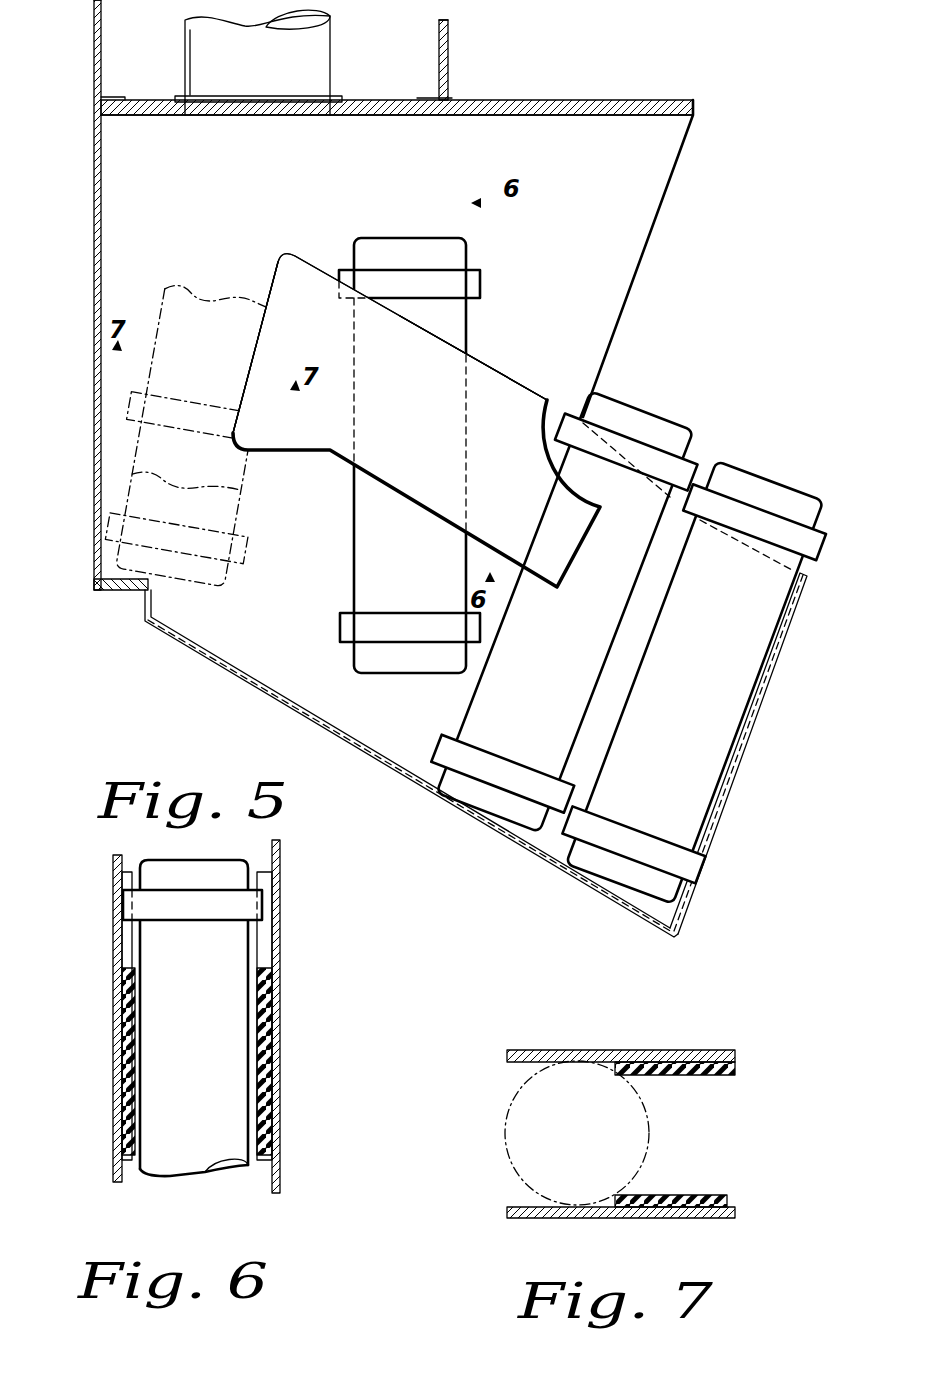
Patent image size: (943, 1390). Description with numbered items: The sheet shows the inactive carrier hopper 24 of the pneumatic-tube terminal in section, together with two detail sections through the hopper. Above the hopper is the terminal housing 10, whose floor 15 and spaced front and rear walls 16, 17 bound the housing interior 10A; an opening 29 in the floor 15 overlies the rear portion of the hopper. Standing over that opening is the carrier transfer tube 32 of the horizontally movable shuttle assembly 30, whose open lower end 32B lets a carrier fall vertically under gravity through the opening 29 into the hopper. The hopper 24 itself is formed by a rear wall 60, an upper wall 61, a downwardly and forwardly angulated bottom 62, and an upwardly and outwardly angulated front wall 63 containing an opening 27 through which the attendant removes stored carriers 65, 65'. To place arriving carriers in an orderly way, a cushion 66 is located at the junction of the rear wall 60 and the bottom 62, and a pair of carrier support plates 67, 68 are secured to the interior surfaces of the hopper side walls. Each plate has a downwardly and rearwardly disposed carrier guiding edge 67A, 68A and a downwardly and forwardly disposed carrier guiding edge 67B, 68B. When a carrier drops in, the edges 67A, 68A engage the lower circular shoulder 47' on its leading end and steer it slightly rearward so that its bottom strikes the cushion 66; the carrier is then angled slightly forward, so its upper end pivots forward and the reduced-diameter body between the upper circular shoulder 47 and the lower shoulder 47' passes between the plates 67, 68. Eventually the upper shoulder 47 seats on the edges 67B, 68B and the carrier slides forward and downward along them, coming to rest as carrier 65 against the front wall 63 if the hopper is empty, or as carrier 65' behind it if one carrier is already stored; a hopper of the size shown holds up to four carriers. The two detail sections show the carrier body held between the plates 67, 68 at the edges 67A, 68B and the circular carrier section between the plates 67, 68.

In FIG. 5, the housing 10 is at (472, 36).
In FIG. 5, the housing interior 10A is at (454, 12).
In FIG. 5, the floor 15 is at (397, 135).
In FIG. 5, the front wall 16 is at (117, 11).
In FIG. 5, the rear wall 17 is at (458, 60).
In FIG. 5, the inactive carrier hopper 24 is at (813, 225).
In FIG. 6, the inactive carrier hopper 24 is at (337, 997).
In FIG. 7, the inactive carrier hopper 24 is at (728, 1021).
In FIG. 5, the opening 27 is at (638, 258).
In FIG. 5, the opening 29 is at (257, 127).
In FIG. 5, the shuttle assembly 30 is at (278, 55).
In FIG. 5, the carrier transfer tube 32 is at (180, 62).
In FIG. 5, the lower end 32B is at (280, 83).
In FIG. 5, the upper circular shoulder 47 is at (409, 455).
In FIG. 6, the upper circular shoulder 47 is at (192, 1018).
In FIG. 5, the lower circular shoulder 47' is at (195, 435).
In FIG. 5, the rear wall 60 is at (73, 295).
In FIG. 5, the upper wall 61 is at (397, 90).
In FIG. 5, the bottom 62 is at (411, 763).
In FIG. 5, the front wall 63 is at (738, 753).
In FIG. 5, the carrier 65 is at (702, 682).
In FIG. 5, the carrier 65' is at (565, 606).
In FIG. 5, the cushion 66 is at (110, 609).
In FIG. 5, the carrier support plate 67 is at (416, 420).
In FIG. 6, the carrier support plate 67 is at (92, 1018).
In FIG. 7, the carrier support plate 67 is at (646, 1201).
In FIG. 5, the carrier guiding edge 67A is at (247, 347).
In FIG. 6, the carrier guiding edge 67A is at (99, 1016).
In FIG. 5, the carrier guiding edge 67B is at (473, 357).
In FIG. 5, the carrier support plate 68 is at (390, 407).
In FIG. 6, the carrier support plate 68 is at (299, 1016).
In FIG. 7, the carrier support plate 68 is at (647, 1064).
In FIG. 5, the carrier guiding edge 68A is at (252, 342).
In FIG. 5, the carrier guiding edge 68B is at (473, 345).
In FIG. 6, the carrier guiding edge 68B is at (300, 1016).